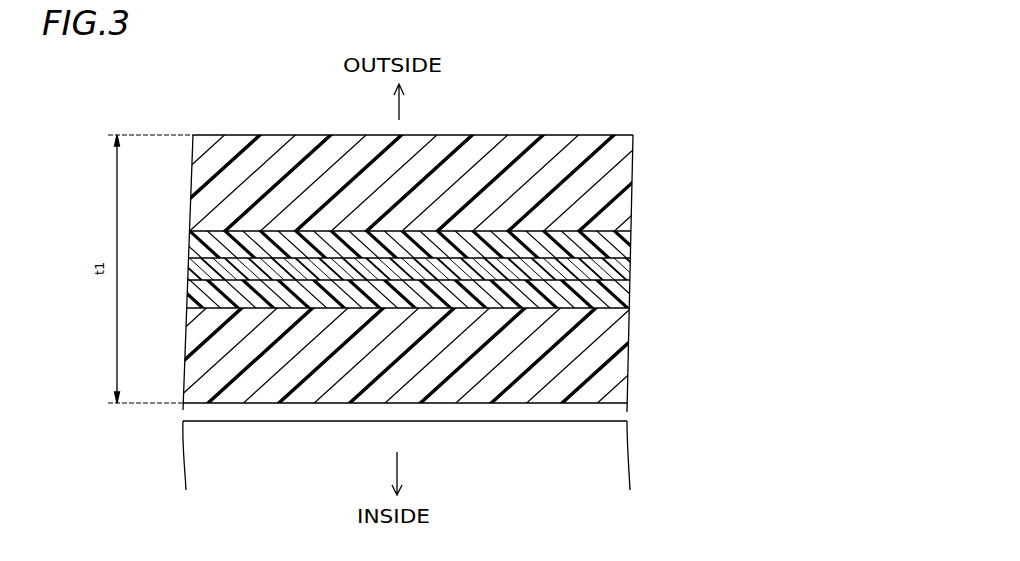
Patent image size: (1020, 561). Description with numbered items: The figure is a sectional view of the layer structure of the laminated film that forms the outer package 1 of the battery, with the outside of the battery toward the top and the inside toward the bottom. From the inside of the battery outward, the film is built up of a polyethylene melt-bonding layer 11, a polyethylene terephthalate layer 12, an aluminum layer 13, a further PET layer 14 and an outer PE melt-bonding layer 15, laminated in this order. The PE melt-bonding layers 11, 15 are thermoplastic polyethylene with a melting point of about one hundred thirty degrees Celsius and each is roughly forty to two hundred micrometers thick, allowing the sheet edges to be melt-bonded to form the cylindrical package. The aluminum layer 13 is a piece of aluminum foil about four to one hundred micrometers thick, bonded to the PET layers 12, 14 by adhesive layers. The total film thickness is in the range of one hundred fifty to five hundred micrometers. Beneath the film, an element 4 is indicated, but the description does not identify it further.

The outer package 1 is at (585, 115).
The inner member 4 is at (633, 456).
The PE melt-bonding layer 11 is at (610, 372).
The PET layer 12 is at (612, 292).
The aluminum layer 13 is at (616, 274).
The PET layer 14 is at (617, 247).
The PE melt-bonding layer 15 is at (606, 181).